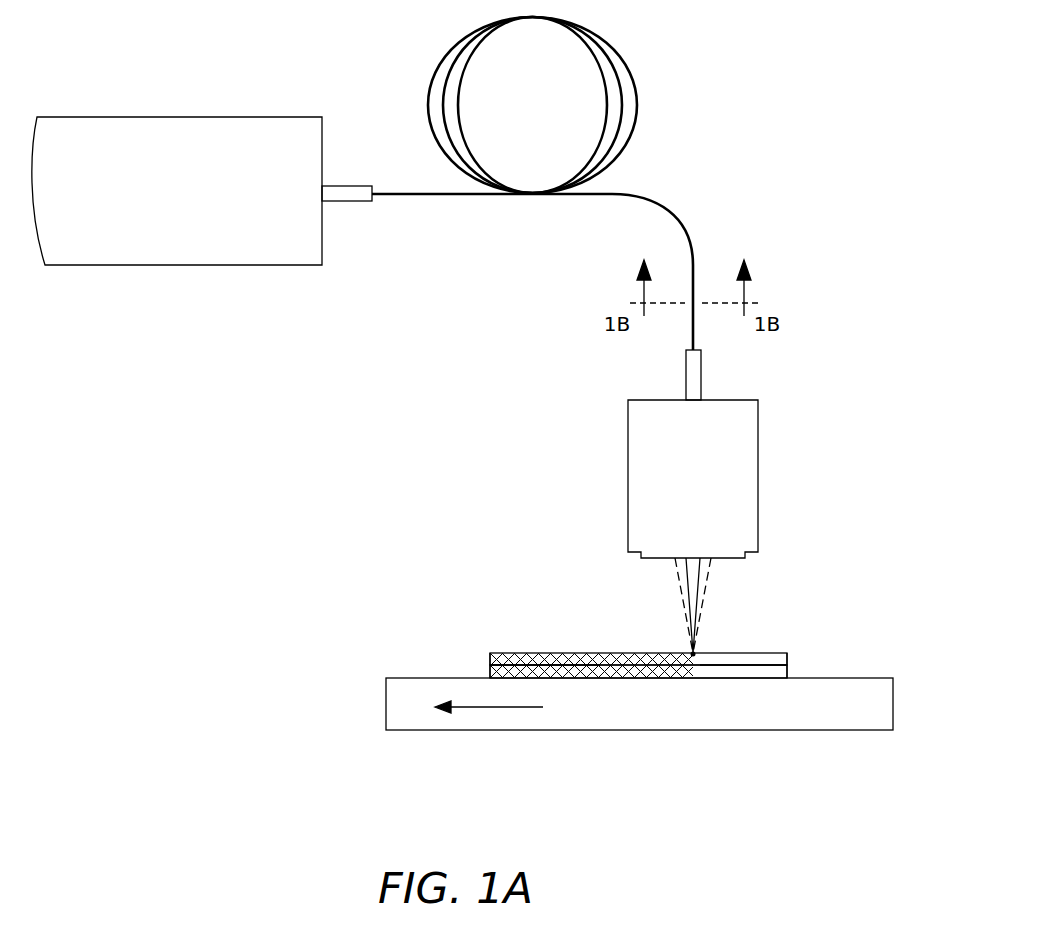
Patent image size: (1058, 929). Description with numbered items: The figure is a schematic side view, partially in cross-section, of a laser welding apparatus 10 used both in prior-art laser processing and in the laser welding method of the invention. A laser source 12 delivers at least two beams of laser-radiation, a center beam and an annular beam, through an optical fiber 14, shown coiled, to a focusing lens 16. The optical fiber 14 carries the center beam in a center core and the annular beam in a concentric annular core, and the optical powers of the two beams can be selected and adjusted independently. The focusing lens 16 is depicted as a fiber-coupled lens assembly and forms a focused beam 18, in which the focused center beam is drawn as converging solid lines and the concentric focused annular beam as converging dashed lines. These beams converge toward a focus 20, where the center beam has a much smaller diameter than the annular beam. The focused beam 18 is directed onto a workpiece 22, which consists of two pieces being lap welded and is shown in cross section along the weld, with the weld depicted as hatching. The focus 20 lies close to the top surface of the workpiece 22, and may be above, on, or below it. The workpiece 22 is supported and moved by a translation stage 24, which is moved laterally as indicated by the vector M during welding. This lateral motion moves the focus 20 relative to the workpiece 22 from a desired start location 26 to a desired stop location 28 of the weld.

The apparatus 10 is at (781, 183).
The laser source 12 is at (212, 128).
The optical fiber 14 is at (643, 96).
The focusing lens 16 is at (754, 428).
The focused beam 18 is at (679, 606).
The focus 20 is at (695, 660).
The workpiece 22 is at (787, 660).
The translation stage 24 is at (411, 683).
The start location 26 is at (504, 651).
The stop location 28 is at (773, 650).